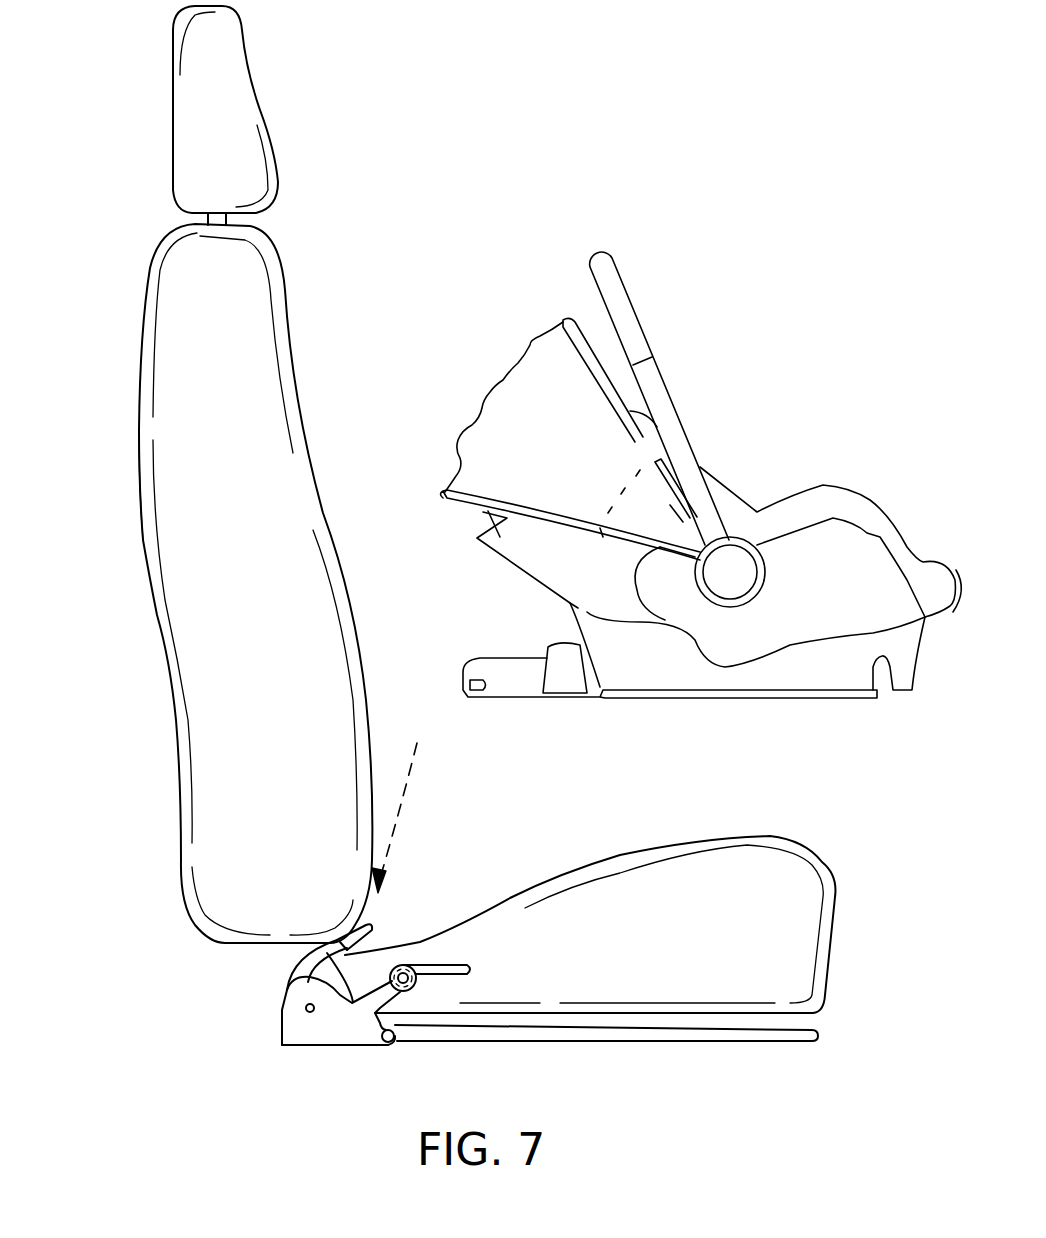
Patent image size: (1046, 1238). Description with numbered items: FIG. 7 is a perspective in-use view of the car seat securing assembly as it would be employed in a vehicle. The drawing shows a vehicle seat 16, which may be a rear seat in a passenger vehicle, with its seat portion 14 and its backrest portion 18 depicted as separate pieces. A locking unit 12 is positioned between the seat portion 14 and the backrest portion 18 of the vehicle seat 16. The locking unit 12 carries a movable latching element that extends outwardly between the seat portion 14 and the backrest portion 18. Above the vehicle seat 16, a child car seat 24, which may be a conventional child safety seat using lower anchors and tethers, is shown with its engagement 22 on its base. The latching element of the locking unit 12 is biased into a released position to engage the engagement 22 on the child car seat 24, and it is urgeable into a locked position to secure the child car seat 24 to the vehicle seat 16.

The locking unit 12 is at (268, 1054).
The seat portion 14 is at (812, 873).
The vehicle seat 16 is at (337, 373).
The backrest portion 18 is at (142, 488).
The engagement 22 is at (466, 660).
The child car seat 24 is at (723, 443).